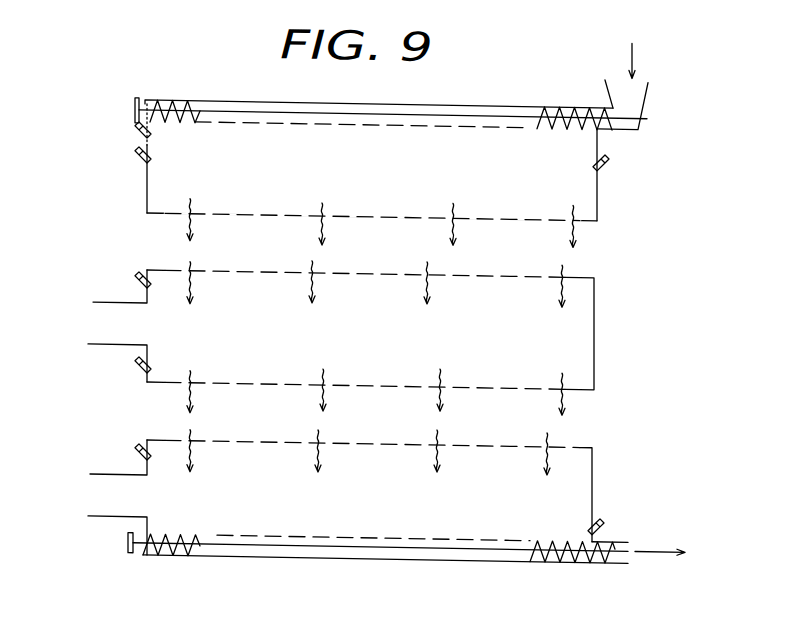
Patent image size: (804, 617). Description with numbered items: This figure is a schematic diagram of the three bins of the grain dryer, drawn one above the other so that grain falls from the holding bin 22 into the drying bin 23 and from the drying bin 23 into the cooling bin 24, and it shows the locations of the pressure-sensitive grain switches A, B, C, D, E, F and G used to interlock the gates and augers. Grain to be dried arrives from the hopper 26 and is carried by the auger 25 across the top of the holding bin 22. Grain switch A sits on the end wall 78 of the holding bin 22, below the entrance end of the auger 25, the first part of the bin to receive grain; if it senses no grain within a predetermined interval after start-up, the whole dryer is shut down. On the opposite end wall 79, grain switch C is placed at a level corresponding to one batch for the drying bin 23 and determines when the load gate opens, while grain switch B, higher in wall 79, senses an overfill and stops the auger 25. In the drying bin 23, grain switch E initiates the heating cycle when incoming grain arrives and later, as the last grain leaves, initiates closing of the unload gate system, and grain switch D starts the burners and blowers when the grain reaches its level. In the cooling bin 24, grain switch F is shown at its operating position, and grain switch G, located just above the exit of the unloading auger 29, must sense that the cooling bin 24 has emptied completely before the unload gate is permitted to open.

The holding bin 22 is at (382, 176).
The drying bin 23 is at (358, 336).
The cooling bin 24 is at (375, 494).
The auger 25 is at (553, 101).
The hopper 26 is at (648, 91).
The unloading auger 29 is at (555, 535).
The end wall 78 is at (597, 137).
The opposite end wall 79 is at (147, 190).
The grain switch A is at (608, 157).
The grain switch B is at (135, 132).
The grain switch C is at (135, 157).
The grain switch D is at (135, 278).
The grain switch E is at (135, 366).
The grain switch F is at (135, 453).
The grain switch G is at (605, 512).